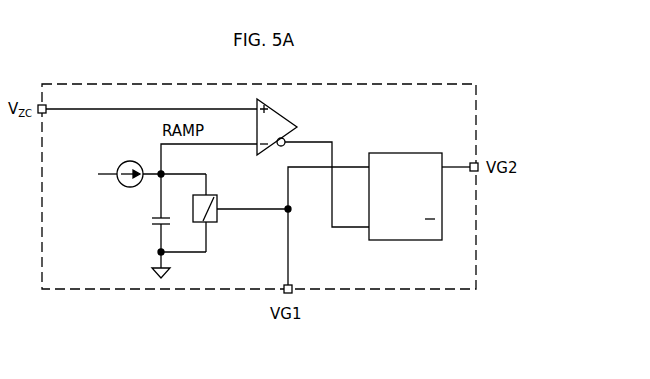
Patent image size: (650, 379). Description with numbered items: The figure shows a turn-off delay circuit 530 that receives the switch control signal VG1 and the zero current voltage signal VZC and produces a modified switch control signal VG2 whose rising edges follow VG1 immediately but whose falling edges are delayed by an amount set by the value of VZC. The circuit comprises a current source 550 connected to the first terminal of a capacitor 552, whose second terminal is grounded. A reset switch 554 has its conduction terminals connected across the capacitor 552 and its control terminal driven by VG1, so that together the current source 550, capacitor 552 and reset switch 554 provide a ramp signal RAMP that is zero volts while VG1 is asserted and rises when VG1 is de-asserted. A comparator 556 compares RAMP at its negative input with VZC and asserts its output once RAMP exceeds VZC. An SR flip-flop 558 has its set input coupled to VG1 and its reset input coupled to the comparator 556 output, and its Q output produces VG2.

The turn-off delay circuit 530 is at (390, 84).
The current source 550 is at (124, 160).
The capacitor 552 is at (153, 232).
The reset switch 554 is at (216, 197).
The comparator 556 is at (280, 115).
The set-reset (SR) flip-flop 558 is at (408, 153).